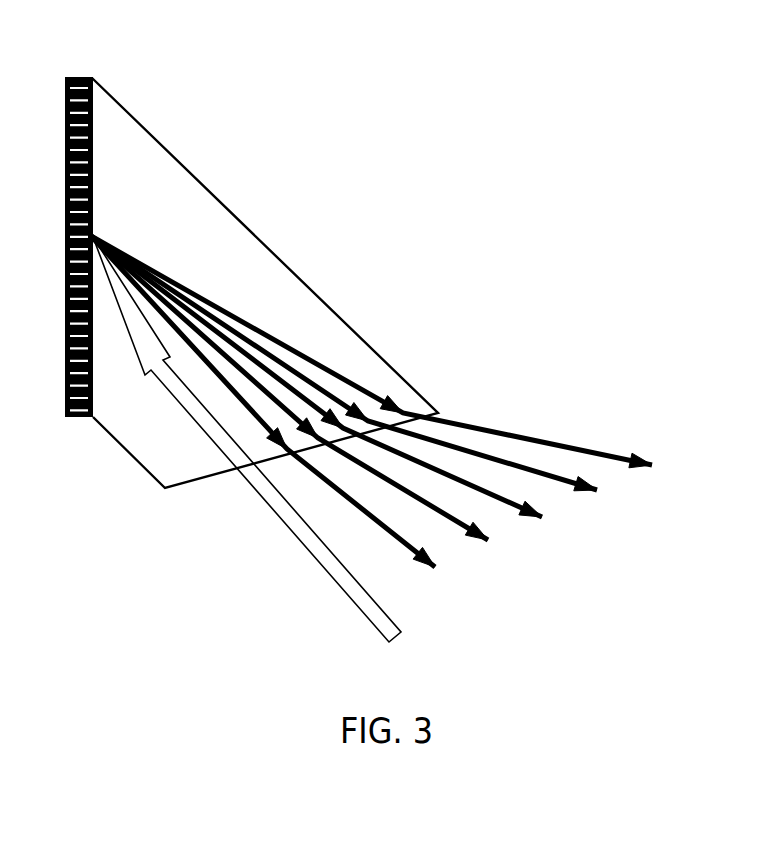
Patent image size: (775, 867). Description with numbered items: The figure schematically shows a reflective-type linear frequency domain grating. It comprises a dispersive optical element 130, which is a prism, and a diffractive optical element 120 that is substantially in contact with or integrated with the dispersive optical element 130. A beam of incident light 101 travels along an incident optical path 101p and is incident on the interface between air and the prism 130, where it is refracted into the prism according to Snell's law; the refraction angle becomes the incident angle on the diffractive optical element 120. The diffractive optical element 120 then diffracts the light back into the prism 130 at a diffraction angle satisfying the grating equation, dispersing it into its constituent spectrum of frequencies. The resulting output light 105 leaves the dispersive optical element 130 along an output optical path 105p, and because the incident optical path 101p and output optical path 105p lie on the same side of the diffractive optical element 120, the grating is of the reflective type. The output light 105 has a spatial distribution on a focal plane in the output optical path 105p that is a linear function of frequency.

The diffractive optical element 120 is at (78, 77).
The dispersive optical element 130 is at (207, 214).
The output light 105 is at (498, 477).
The output optical path 105p is at (603, 584).
The incident light 101 is at (343, 587).
The incident optical path 101p is at (259, 556).